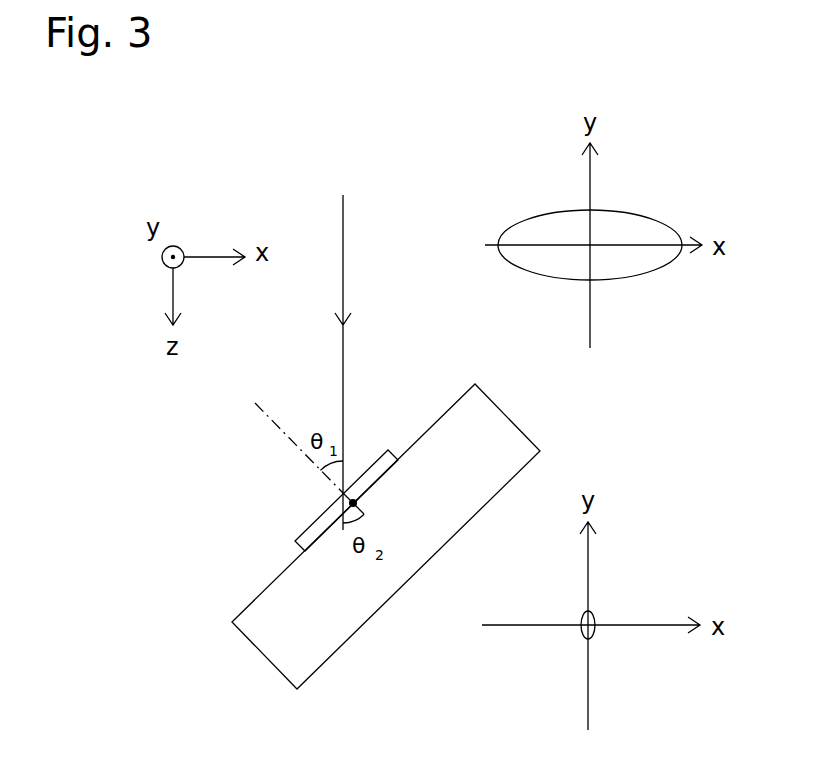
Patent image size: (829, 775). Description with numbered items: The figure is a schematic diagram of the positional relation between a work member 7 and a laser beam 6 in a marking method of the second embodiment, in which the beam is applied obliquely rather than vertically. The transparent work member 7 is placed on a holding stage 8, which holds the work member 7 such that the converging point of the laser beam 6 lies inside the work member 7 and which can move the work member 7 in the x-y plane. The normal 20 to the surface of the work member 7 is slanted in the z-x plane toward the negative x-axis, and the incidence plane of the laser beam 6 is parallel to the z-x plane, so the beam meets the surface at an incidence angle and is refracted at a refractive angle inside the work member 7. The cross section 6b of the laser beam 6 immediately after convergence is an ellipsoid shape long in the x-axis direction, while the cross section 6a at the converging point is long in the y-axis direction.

The laser beam 6 is at (343, 238).
The cross section at the converging point 6a is at (595, 617).
The cross section of the laser beam 6b is at (650, 217).
The work member 7 is at (300, 532).
The holding stage 8 is at (275, 665).
The normal 20 is at (280, 432).